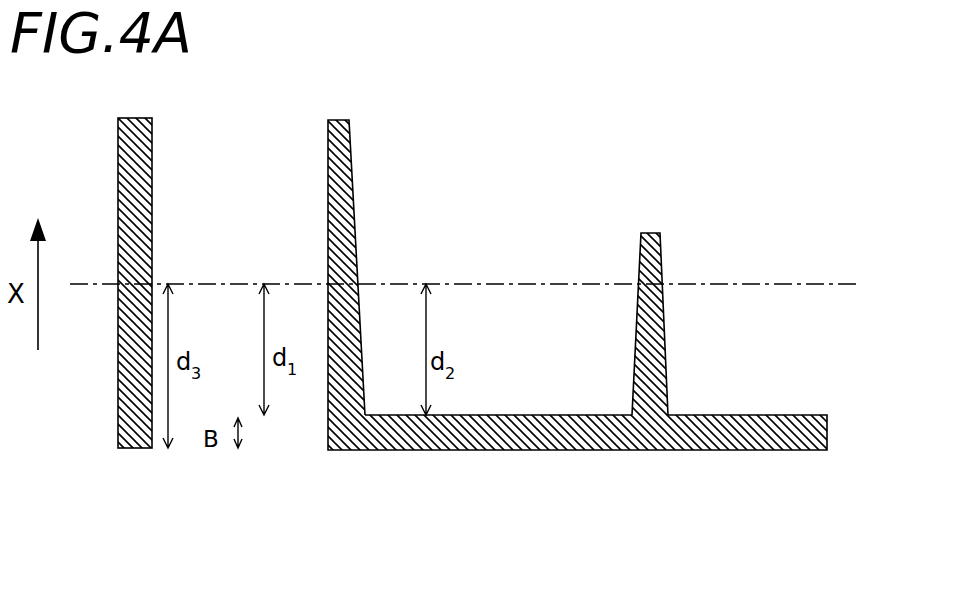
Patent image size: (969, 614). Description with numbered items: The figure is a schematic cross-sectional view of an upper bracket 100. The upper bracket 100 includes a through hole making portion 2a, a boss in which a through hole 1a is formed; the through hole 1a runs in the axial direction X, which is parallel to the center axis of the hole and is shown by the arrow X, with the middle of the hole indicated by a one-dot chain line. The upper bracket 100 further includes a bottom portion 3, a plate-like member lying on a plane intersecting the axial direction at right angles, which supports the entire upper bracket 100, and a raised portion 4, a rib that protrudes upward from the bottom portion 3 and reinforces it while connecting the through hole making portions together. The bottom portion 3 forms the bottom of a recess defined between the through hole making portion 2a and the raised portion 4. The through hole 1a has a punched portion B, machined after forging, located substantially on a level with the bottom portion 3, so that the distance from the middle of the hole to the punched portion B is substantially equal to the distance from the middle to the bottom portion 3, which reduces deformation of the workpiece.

The through hole 1a is at (258, 186).
The through hole making portion 2a is at (337, 118).
The bottom portion 3 is at (521, 452).
The raised portion 4 is at (654, 338).
The upper bracket 100 is at (787, 157).